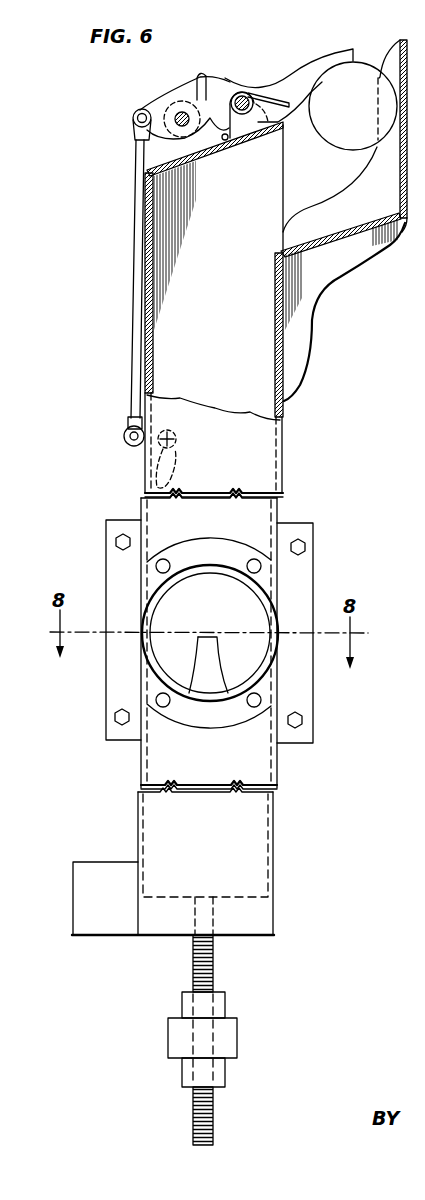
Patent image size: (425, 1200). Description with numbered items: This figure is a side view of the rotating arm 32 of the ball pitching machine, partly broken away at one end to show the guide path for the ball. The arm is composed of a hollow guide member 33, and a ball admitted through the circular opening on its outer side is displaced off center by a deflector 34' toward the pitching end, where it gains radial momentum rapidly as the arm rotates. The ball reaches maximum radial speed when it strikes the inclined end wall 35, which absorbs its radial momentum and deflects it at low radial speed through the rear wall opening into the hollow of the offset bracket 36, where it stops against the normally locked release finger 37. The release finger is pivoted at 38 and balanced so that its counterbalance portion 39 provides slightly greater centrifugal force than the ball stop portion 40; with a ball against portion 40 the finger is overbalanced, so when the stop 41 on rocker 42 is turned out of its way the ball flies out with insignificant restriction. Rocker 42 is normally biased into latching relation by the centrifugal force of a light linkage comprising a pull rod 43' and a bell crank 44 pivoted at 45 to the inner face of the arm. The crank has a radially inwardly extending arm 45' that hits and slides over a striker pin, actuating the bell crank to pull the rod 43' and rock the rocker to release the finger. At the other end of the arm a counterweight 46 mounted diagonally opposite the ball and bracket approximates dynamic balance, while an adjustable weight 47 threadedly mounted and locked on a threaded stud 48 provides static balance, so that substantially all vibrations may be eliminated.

The rotating arm 32 is at (120, 509).
The hollow guide member 33 is at (260, 470).
The deflector 34' is at (224, 665).
The inclined end wall 35 is at (237, 141).
The offset bracket 36 is at (367, 240).
The release finger 37 is at (277, 72).
The pivot 38 is at (244, 95).
The counterbalance portion 39 is at (218, 83).
The ball stop portion 40 is at (342, 53).
The stop 41 is at (203, 97).
The rocker 42 is at (155, 114).
The pull rod 43' is at (125, 263).
The bell crank 44 is at (131, 446).
The pivot 45 is at (188, 438).
The radially inwardly extending arm 45' is at (192, 468).
The counterweight 46 is at (88, 883).
The adjustable weight 47 is at (227, 1037).
The threaded stud 48 is at (213, 1108).